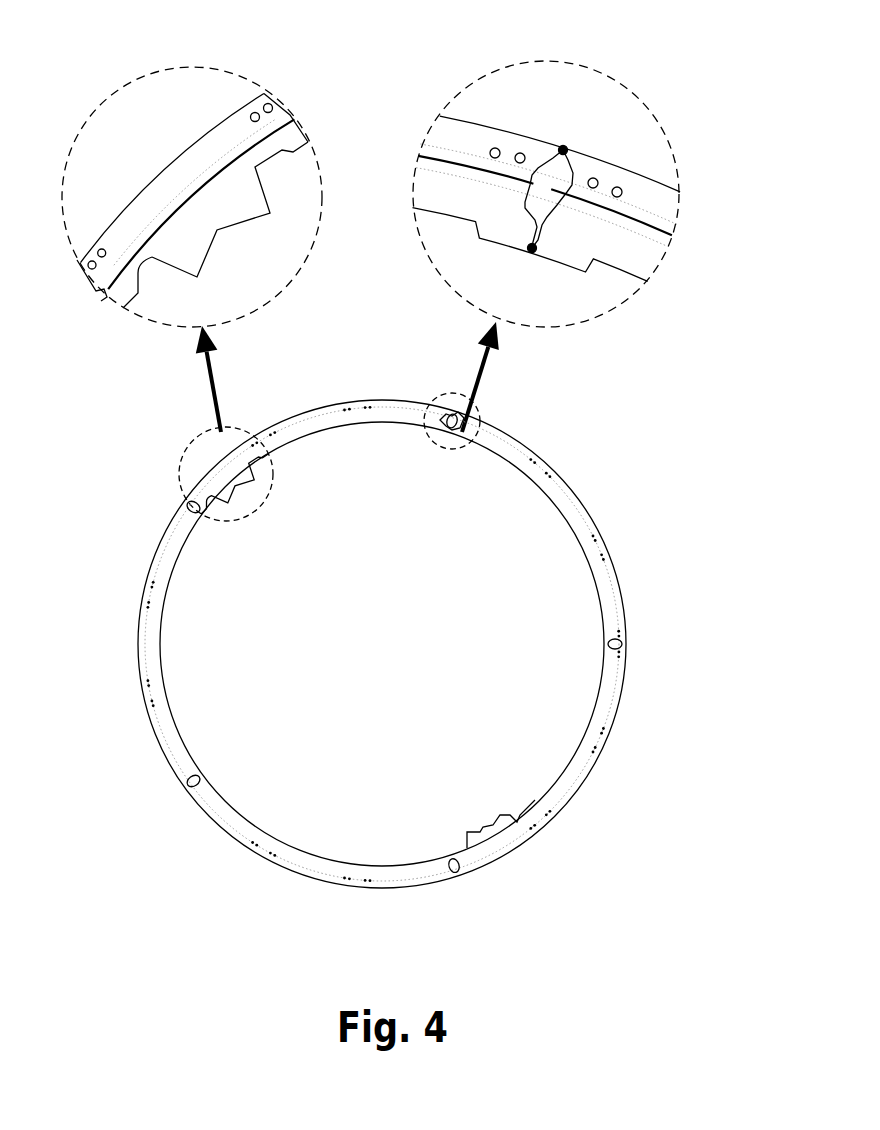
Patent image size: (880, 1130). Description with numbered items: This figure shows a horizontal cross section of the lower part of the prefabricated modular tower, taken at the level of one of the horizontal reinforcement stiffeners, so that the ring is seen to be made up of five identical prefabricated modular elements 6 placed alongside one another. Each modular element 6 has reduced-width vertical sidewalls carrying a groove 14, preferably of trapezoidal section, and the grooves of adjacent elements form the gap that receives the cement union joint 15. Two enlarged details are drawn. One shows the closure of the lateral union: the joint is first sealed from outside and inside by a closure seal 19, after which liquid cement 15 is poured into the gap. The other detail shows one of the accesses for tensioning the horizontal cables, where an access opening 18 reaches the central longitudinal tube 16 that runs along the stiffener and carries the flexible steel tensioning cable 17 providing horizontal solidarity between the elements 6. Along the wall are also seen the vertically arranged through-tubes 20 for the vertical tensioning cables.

The prefabricated modular element 6 is at (330, 405).
The groove 14 is at (185, 510).
The cement union joint 15 is at (552, 182).
The central longitudinal tube 16 is at (245, 155).
The tensioning cable 17 is at (273, 185).
The access opening 18 is at (273, 173).
The closure seal 19 is at (563, 145).
The through-tube 20 is at (256, 112).